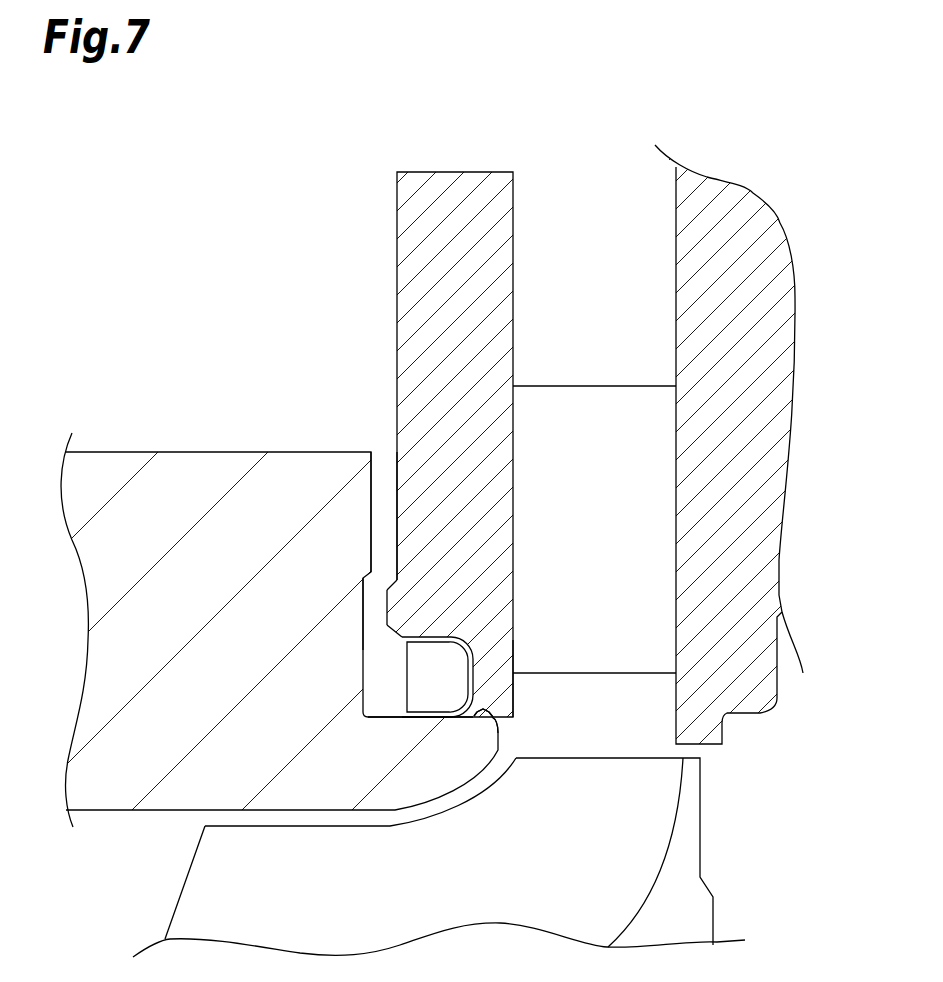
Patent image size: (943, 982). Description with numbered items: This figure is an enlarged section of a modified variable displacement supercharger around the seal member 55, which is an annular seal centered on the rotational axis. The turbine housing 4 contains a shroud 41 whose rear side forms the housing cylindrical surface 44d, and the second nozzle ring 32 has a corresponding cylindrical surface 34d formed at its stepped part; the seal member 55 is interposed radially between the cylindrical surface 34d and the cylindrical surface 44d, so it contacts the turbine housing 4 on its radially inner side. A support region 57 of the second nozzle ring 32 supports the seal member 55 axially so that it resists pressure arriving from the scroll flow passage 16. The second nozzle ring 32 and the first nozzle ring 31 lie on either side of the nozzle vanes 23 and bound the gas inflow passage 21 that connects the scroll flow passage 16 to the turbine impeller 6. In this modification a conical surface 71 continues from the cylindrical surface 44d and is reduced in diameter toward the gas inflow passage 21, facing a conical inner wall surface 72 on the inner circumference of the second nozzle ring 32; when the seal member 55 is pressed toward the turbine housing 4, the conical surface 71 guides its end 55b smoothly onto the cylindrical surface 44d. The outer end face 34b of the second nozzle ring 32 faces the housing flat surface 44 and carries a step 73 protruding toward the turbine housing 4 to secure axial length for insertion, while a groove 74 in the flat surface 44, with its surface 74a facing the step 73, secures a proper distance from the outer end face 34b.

The turbine housing 4 is at (188, 470).
The turbine impeller 6 is at (633, 773).
The scroll flow passage 16 is at (221, 349).
The gas inflow passage 21 is at (555, 322).
The nozzle vanes 23 is at (605, 408).
The first nozzle ring 31 is at (695, 255).
The second nozzle ring 32 is at (413, 268).
The outer end face 34b is at (385, 531).
The cylindrical surface 34d is at (398, 653).
The shroud 41 is at (466, 790).
The flat surface 44 is at (378, 555).
The cylindrical surface 44d is at (424, 712).
The seal member 55 is at (467, 643).
The end of seal member 55b is at (375, 716).
The support region 57 is at (503, 652).
The conical surface 71 is at (465, 722).
The conical inner wall surface 72 is at (497, 722).
The step 73 is at (374, 635).
The groove 74 is at (393, 628).
The surface 74a is at (365, 602).